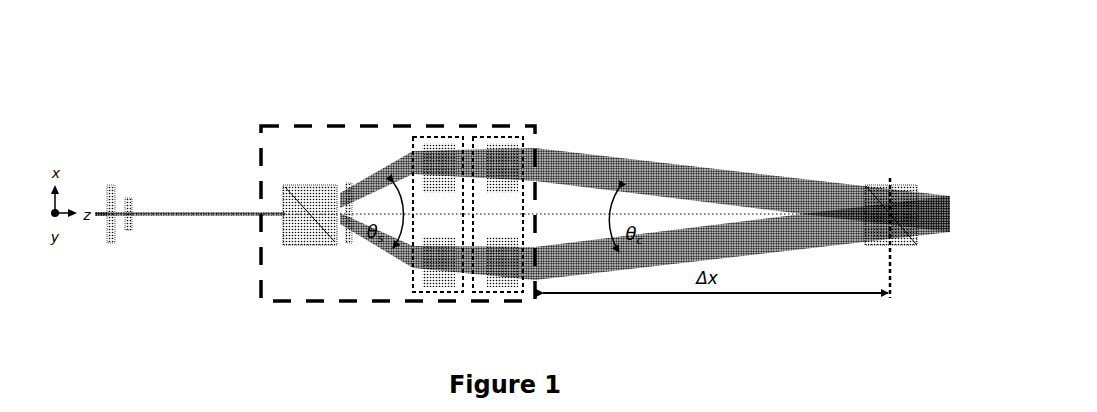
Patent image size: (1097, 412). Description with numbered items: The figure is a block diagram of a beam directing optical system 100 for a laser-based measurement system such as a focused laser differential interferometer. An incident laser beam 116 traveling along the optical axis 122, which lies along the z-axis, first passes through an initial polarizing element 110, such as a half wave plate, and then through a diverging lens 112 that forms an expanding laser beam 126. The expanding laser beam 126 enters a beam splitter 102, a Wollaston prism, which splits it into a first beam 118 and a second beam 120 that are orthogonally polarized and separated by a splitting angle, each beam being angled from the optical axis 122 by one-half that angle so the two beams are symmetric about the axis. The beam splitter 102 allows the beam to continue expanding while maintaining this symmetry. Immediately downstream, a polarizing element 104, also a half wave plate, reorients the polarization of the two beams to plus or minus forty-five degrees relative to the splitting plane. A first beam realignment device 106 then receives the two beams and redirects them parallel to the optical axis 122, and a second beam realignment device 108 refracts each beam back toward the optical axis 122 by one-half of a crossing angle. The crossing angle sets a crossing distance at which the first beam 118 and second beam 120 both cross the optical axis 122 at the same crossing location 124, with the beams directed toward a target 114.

The beam directing optical system 100 is at (282, 125).
The beam splitter 102 is at (297, 245).
The polarizing element 104 is at (347, 243).
The first beam realignment device 106 is at (429, 133).
The second beam realignment device 108 is at (522, 131).
The initial polarizing element 110 is at (111, 233).
The diverging lens 112 is at (132, 223).
The target 114 is at (900, 236).
The incident laser beam 116 is at (102, 212).
The first beam 118 is at (402, 172).
The second beam 120 is at (396, 250).
The optical axis 122 is at (588, 212).
The crossing location 124 is at (890, 178).
The expanding laser beam 126 is at (258, 215).